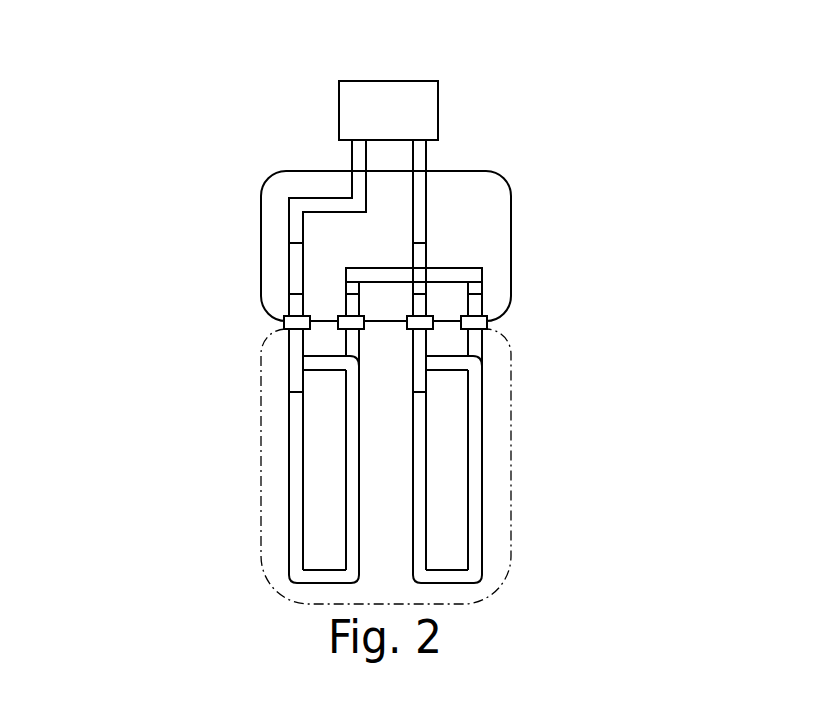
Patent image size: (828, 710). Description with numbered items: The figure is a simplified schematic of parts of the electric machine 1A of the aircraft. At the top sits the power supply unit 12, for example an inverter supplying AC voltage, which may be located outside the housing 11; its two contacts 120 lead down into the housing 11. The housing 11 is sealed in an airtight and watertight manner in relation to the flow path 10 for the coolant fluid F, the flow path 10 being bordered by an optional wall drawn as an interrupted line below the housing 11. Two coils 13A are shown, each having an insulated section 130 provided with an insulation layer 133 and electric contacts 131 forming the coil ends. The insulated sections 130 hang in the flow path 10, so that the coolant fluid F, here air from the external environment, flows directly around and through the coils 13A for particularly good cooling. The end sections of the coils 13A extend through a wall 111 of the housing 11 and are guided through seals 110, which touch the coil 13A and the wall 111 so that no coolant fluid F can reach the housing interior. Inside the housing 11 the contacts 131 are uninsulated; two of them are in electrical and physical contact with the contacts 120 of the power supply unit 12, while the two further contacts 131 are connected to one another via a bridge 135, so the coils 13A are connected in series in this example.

The electric machine 1A is at (126, 216).
The flow path 10 is at (277, 487).
The housing 11 is at (511, 232).
The power supply unit 12 is at (357, 112).
The coil 13A is at (280, 522).
The seal 110 is at (297, 317).
The wall 111 is at (322, 322).
The contact 120 is at (290, 228).
The insulated section 130 is at (280, 438).
The electric contact 131 is at (293, 272).
The insulation layer 133 is at (297, 557).
The bridge 135 is at (393, 270).
The coolant fluid F is at (497, 488).